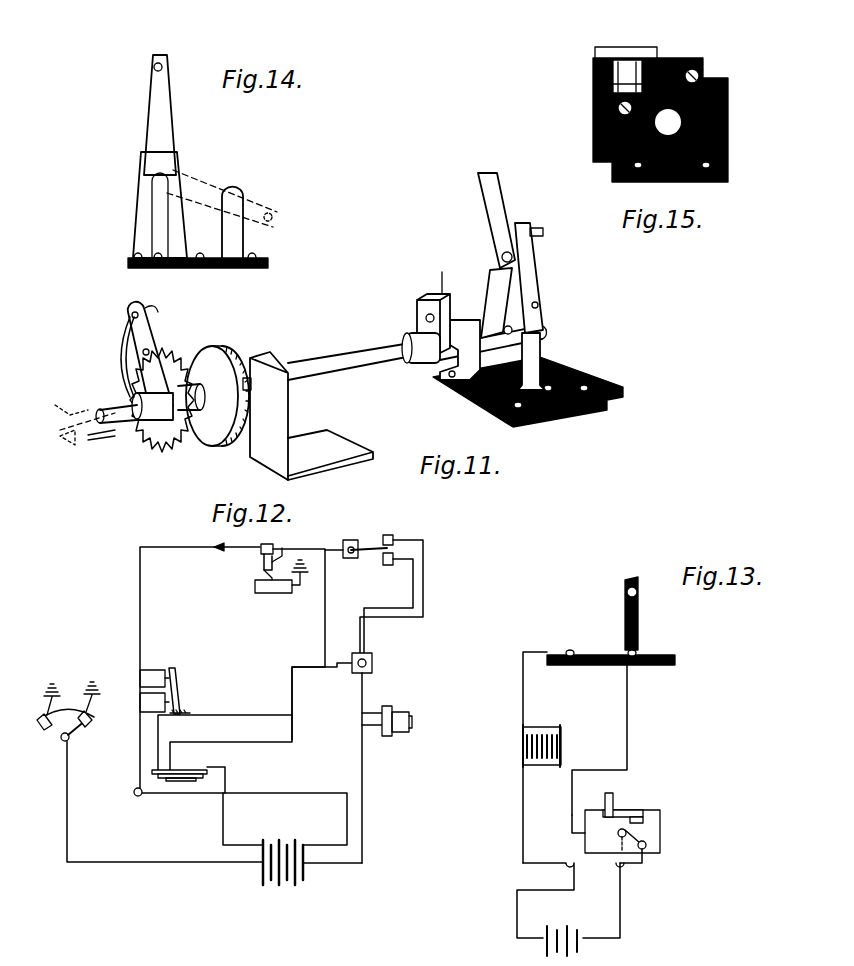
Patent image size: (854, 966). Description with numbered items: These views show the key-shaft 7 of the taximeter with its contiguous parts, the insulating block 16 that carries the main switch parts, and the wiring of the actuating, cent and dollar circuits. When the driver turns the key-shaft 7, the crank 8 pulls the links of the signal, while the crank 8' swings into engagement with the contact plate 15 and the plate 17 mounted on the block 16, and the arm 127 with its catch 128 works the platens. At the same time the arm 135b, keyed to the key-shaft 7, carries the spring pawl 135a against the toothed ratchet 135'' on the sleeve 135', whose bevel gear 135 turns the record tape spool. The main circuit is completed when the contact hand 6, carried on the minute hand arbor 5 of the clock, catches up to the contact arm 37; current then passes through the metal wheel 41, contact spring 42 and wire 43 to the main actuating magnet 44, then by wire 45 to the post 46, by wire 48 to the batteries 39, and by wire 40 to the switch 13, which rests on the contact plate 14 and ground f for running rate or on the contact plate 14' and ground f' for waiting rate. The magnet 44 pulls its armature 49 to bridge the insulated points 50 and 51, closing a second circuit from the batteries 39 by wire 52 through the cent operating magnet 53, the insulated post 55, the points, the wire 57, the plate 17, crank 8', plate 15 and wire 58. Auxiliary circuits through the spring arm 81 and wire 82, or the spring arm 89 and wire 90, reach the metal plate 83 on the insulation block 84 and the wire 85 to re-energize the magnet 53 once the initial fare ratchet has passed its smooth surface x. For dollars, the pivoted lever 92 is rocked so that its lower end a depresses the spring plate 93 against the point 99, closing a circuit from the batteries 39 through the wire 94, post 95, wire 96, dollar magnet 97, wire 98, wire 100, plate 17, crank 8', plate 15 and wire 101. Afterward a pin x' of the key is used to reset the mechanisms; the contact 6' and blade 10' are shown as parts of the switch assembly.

In FIG. 12, the minute hand arbor 5 is at (254, 586).
In FIG. 12, the contact hand 6 is at (278, 560).
In FIG. 12, the contact 6' is at (183, 785).
In FIG. 11, the key-shaft 7 is at (330, 365).
In FIG. 12, the key-shaft 7 is at (270, 595).
In FIG. 11, the crank 8 is at (494, 255).
In FIG. 14, the crank 8' is at (171, 115).
In FIG. 15, the crank 8' is at (606, 70).
In FIG. 11, the crank 8' is at (538, 278).
In FIG. 13, the crank 8' is at (623, 799).
In FIG. 13, the switch blade 10' is at (638, 836).
In FIG. 12, the switch 13 is at (70, 748).
In FIG. 12, the contact plate 14 is at (59, 732).
In FIG. 12, the contact plate 14' is at (95, 732).
In FIG. 14, the contact plate 15 is at (245, 198).
In FIG. 15, the contact plate 15 is at (703, 70).
In FIG. 11, the contact plate 15 is at (466, 318).
In FIG. 12, the contact plate 15 is at (220, 768).
In FIG. 13, the contact plate 15 is at (660, 816).
In FIG. 14, the block of insulation 16 is at (266, 268).
In FIG. 15, the block of insulation 16 is at (729, 137).
In FIG. 11, the block of insulation 16 is at (490, 410).
In FIG. 12, the block of insulation 16 is at (180, 768).
In FIG. 13, the block of insulation 16 is at (622, 831).
In FIG. 14, the plate 17 is at (150, 209).
In FIG. 15, the plate 17 is at (596, 110).
In FIG. 11, the plate 17 is at (543, 345).
In FIG. 13, the plate 17 is at (605, 805).
In FIG. 12, the contact arm 37 is at (258, 568).
In FIG. 12, the batteries 39 is at (262, 862).
In FIG. 13, the wire 40 is at (562, 946).
In FIG. 12, the metal wheel 41 is at (275, 548).
In FIG. 12, the contact spring 42 is at (214, 539).
In FIG. 12, the wire 43 is at (140, 612).
In FIG. 12, the main actuating magnet 44 is at (152, 673).
In FIG. 12, the wire 45 is at (140, 789).
In FIG. 14, the post 46 is at (134, 256).
In FIG. 15, the post 46 is at (627, 182).
In FIG. 11, the post 46 is at (523, 418).
In FIG. 12, the post 46 is at (133, 795).
In FIG. 12, the wire 48 is at (242, 793).
In FIG. 12, the armature 49 is at (178, 678).
In FIG. 12, the insulated point 50 is at (190, 712).
In FIG. 12, the insulated point 51 is at (170, 712).
In FIG. 12, the wire 52 is at (364, 782).
In FIG. 12, the cent operating magnet 53 is at (395, 714).
In FIG. 12, the insulated post 55 is at (374, 663).
In FIG. 12, the wire 57 is at (158, 752).
In FIG. 12, the wire 58 is at (230, 782).
In FIG. 12, the spring arm 81 is at (393, 540).
In FIG. 12, the wire 82 is at (425, 584).
In FIG. 12, the metal plate 83 is at (349, 546).
In FIG. 12, the block of insulation 84 is at (372, 546).
In FIG. 12, the wire 85 is at (178, 768).
In FIG. 12, the spring arm 89 is at (380, 560).
In FIG. 12, the wire 90 is at (413, 590).
In FIG. 13, the pivoted lever 92 is at (625, 600).
In FIG. 13, the spring plate 93 is at (590, 652).
In FIG. 13, the wire 94 is at (621, 912).
In FIG. 14, the post 95 is at (200, 252).
In FIG. 15, the post 95 is at (729, 165).
In FIG. 11, the post 95 is at (600, 375).
In FIG. 13, the post 95 is at (647, 845).
In FIG. 13, the wire 96 is at (523, 832).
In FIG. 13, the dollar magnet 97 is at (562, 736).
In FIG. 13, the wire 98 is at (524, 702).
In FIG. 13, the point 99 is at (660, 653).
In FIG. 13, the wire 100 is at (628, 720).
In FIG. 13, the wire 101 is at (574, 884).
In FIG. 11, the arm 127 is at (417, 315).
In FIG. 11, the catch 128 is at (439, 274).
In FIG. 11, the bevel gear 135 is at (309, 408).
In FIG. 11, the sleeve 135' is at (213, 386).
In FIG. 11, the toothed ratchet 135'' is at (154, 409).
In FIG. 11, the spring pawl 135a is at (126, 348).
In FIG. 11, the arm 135b is at (148, 366).
In FIG. 13, the lower end a is at (637, 649).
In FIG. 12, the ground f is at (52, 695).
In FIG. 12, the ground f' is at (98, 693).
In FIG. 11, the smooth surface x is at (81, 429).
In FIG. 11, the pin x' is at (66, 398).